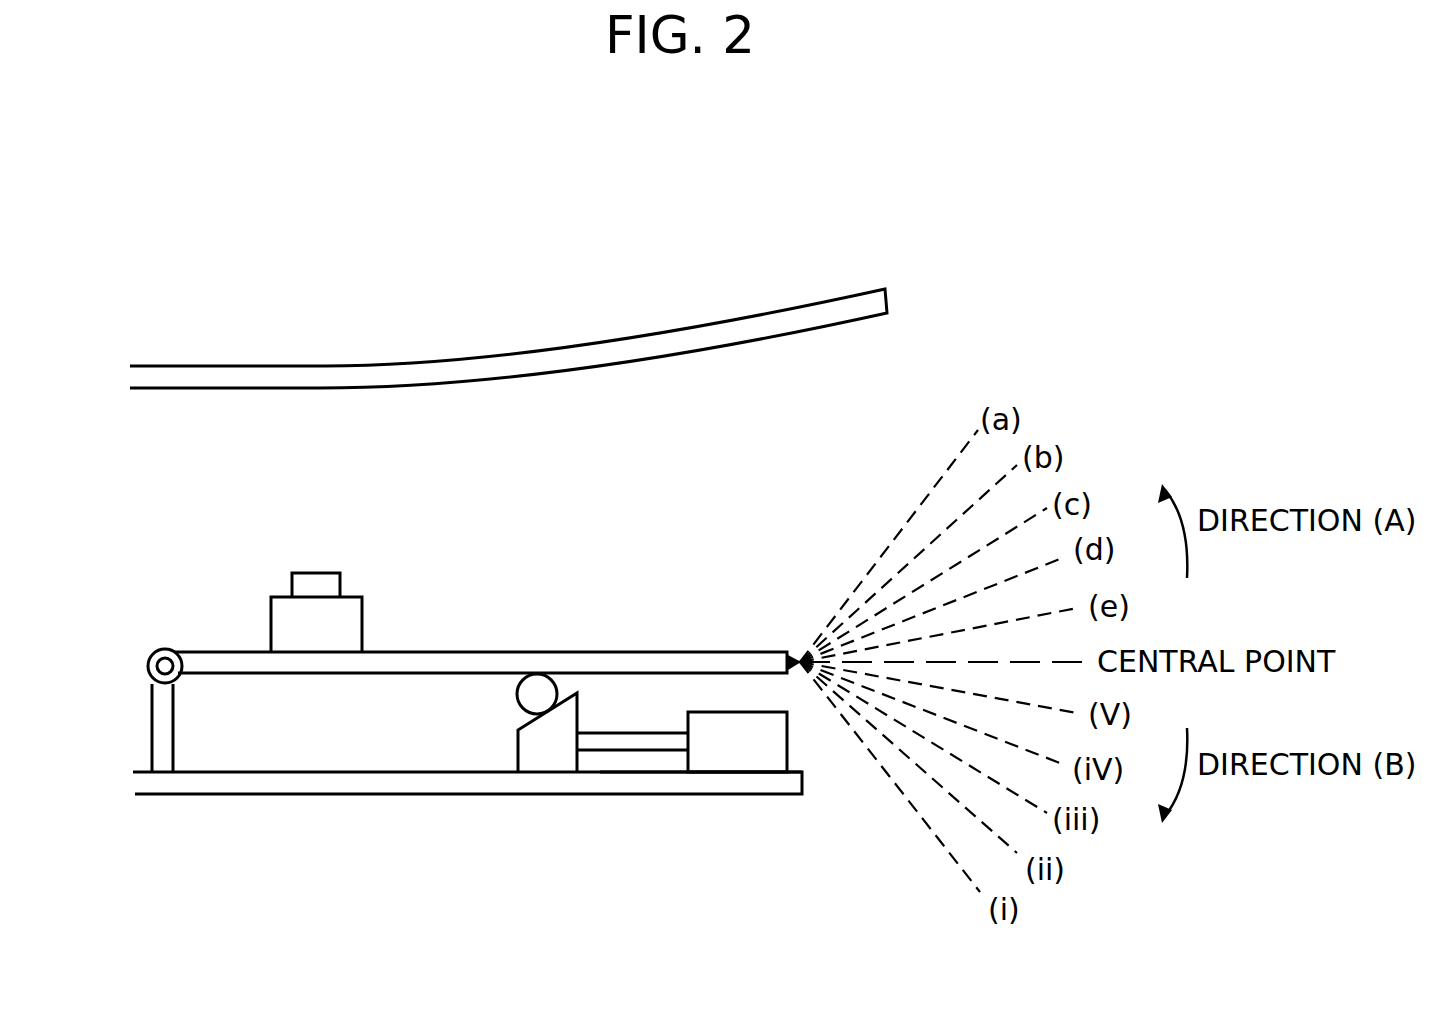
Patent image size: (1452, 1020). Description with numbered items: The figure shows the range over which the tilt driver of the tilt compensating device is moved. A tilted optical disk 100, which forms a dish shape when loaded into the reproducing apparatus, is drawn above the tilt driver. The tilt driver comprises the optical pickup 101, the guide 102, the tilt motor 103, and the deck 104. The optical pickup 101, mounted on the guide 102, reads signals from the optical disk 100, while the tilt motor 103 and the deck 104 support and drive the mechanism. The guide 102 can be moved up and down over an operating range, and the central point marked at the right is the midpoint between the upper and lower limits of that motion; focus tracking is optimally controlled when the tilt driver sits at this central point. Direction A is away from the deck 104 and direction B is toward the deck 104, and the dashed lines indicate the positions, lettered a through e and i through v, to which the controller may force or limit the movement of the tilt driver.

The optical disk 100 is at (622, 339).
The optical pickup 101 is at (317, 573).
The guide 102 is at (590, 650).
The tilt motor 103 is at (737, 773).
The deck 104 is at (470, 794).